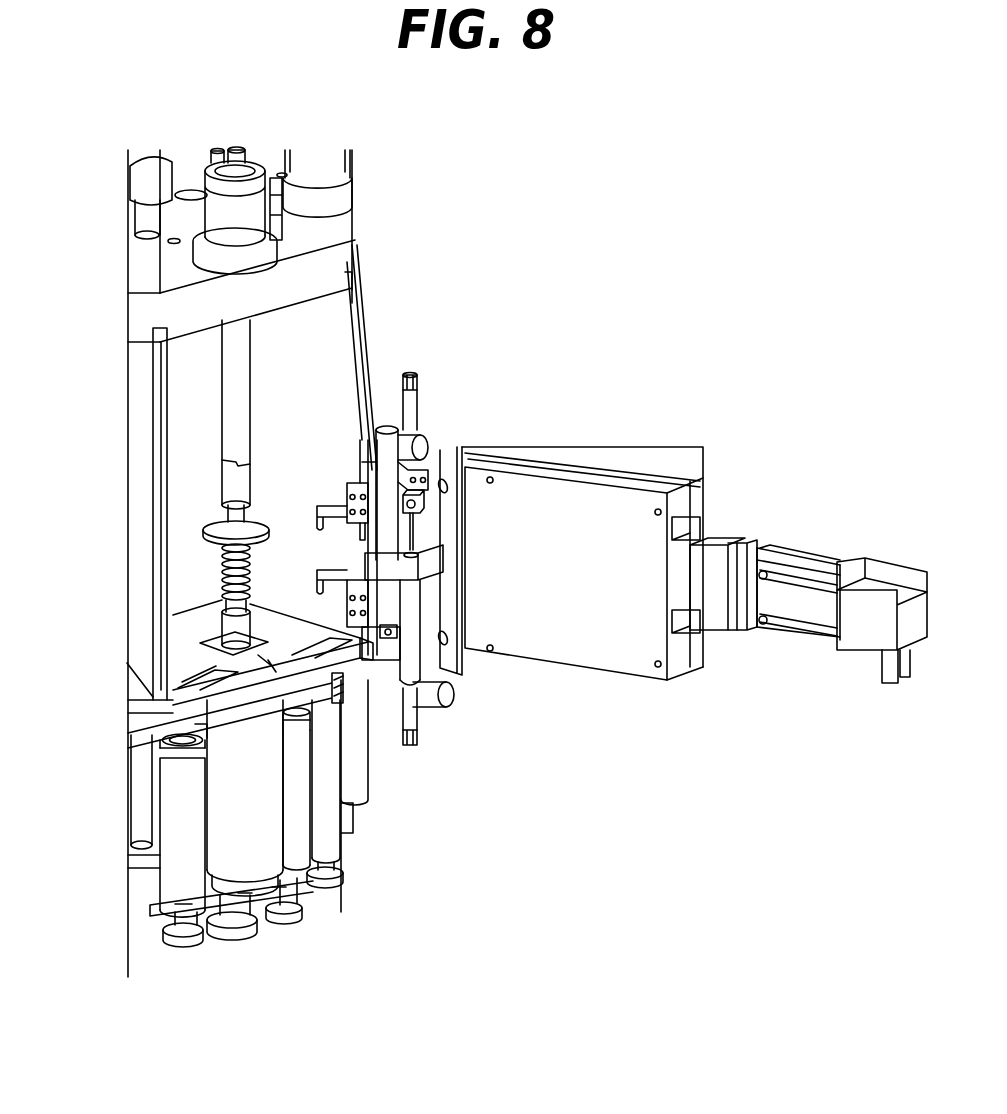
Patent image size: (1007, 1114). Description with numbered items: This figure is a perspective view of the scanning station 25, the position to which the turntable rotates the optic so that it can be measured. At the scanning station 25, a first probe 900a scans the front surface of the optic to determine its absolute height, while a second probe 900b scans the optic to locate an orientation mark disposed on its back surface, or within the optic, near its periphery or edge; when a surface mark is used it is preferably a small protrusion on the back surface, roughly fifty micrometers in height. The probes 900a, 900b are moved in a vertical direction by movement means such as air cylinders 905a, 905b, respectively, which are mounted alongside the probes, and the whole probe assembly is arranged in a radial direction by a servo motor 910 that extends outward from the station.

The scanning station 25 is at (122, 687).
The first probe 900a is at (353, 480).
The second probe 900b is at (372, 627).
The air cylinder 905a is at (421, 407).
The air cylinder 905b is at (413, 722).
The servo motor 910 is at (797, 610).